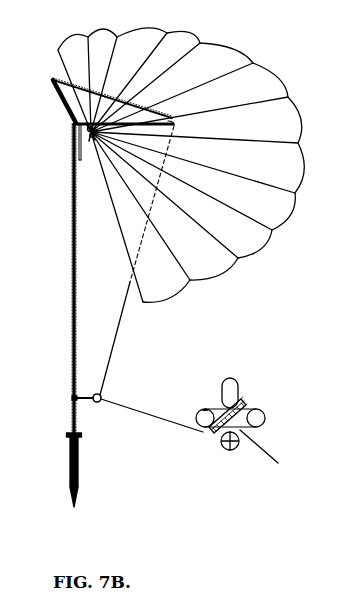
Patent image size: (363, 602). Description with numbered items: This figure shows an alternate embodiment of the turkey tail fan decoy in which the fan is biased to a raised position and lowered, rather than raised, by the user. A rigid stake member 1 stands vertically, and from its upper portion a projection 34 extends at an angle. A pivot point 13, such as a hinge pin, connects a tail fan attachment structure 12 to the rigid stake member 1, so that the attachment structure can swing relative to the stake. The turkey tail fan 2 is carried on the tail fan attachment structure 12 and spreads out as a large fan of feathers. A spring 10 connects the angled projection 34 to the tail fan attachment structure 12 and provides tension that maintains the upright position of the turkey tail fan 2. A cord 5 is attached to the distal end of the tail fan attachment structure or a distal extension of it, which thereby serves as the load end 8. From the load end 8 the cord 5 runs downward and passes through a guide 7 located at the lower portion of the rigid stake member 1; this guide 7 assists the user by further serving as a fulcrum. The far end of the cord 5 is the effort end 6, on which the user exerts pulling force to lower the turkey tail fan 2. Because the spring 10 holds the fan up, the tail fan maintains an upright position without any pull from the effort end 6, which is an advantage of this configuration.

The rigid stake member 1 is at (72, 326).
The turkey tail fan 2 is at (283, 77).
The cord 5 is at (137, 413).
The effort end 6 is at (238, 386).
The guide 7 is at (98, 403).
The load end 8 is at (176, 124).
The spring 10 is at (132, 103).
The tail fan attachment structure 12 is at (96, 141).
The pivot point 13 is at (81, 160).
The projection 34 is at (62, 102).